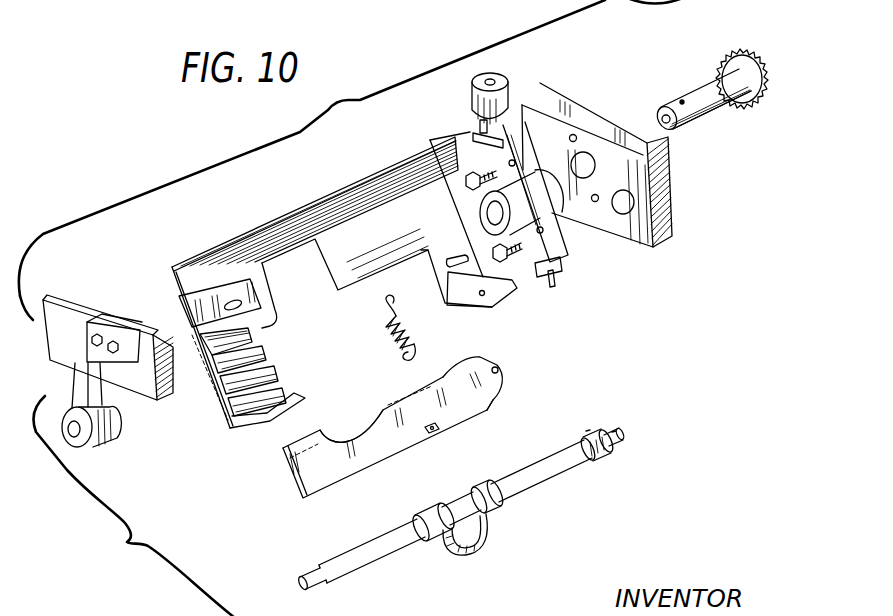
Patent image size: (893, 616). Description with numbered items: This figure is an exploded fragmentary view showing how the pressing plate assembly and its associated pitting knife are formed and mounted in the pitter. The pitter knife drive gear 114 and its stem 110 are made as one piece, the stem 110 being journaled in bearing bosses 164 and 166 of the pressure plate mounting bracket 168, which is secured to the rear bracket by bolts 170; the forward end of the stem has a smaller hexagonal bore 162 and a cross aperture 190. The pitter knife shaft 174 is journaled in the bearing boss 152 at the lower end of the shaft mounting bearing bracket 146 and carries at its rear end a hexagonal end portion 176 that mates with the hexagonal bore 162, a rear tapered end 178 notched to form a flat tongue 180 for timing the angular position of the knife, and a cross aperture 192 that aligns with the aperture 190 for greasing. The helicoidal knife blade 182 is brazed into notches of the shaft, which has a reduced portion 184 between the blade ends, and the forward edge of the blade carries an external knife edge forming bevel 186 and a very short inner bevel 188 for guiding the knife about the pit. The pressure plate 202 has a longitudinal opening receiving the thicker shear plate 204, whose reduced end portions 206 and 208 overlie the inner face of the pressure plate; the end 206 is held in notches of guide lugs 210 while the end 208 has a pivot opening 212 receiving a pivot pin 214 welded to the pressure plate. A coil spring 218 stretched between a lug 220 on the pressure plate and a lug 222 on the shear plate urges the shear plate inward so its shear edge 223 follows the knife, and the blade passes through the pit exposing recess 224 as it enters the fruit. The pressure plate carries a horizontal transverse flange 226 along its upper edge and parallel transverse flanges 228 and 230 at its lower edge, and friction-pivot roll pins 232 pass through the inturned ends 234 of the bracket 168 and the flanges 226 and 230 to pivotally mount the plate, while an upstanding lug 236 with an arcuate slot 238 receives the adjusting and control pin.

The stem 110 is at (713, 106).
The pitter knife drive gear 114 is at (737, 57).
The shaft mounting bearing bracket 146 is at (108, 389).
The bearing boss 152 is at (101, 437).
The hexagonal bore 162 is at (658, 112).
The bearing boss 164 is at (546, 182).
The bearing boss 166 is at (557, 197).
The pressure plate mounting bracket 168 is at (568, 258).
The bolts 170 is at (465, 182).
The pitter knife shaft 174 is at (557, 479).
The hexagonal end portion 176 is at (590, 456).
The rear tapered end 178 is at (621, 447).
The flat tongue 180 is at (616, 437).
The helicoidal knife blade 182 is at (424, 533).
The reduced portion 184 is at (488, 536).
The knife edge forming bevel 186 is at (458, 554).
The short bevel 188 is at (478, 550).
The cross aperture 190 is at (681, 101).
The cross aperture 192 is at (587, 434).
The pressure plate 202 is at (335, 220).
The shear plate 204 is at (436, 384).
The reduced end portion 206 is at (307, 471).
The reduced end portion 208 is at (500, 384).
The guide lugs 210 is at (212, 378).
The pivot opening 212 is at (499, 369).
The pivot pin 214 is at (426, 262).
The coil spring 218 is at (384, 301).
The lug 220 is at (446, 265).
The lug 222 is at (432, 434).
The shear edge 223 is at (356, 440).
The pit exposing recess 224 is at (316, 262).
The horizontal transverse flange 226 is at (220, 253).
The transverse flange 228 is at (288, 420).
The transverse flange 230 is at (490, 293).
The friction-pivot roll pins 232 is at (472, 131).
The inturned ends 234 is at (509, 126).
The upstanding lug 236 is at (200, 307).
The arcuate slot 238 is at (236, 300).